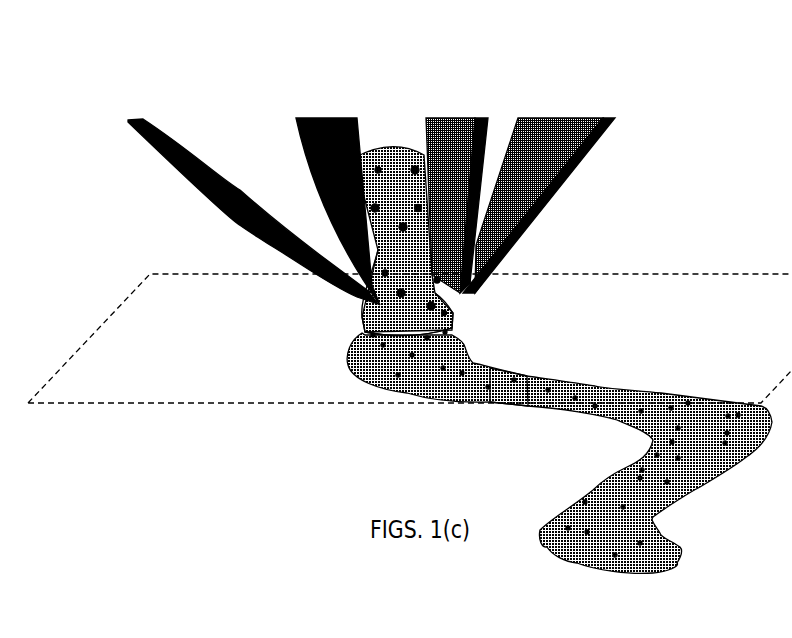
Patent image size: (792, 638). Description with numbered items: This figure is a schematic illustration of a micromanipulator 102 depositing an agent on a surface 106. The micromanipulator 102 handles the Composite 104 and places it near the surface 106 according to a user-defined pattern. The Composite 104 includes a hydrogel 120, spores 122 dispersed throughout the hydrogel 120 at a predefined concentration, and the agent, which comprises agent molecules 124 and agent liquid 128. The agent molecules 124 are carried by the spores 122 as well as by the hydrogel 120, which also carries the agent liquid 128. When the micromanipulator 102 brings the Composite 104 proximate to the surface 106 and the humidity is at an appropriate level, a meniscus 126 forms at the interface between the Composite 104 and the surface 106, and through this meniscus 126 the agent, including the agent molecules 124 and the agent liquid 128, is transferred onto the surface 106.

The micromanipulator 102 is at (131, 117).
The Composite 104 is at (409, 148).
The surface 106 is at (228, 382).
The hydrogel 120 is at (438, 215).
The spores 122 is at (403, 224).
The agent molecules 124 is at (547, 395).
The meniscus 126 is at (357, 347).
The agent liquid 128 is at (600, 488).